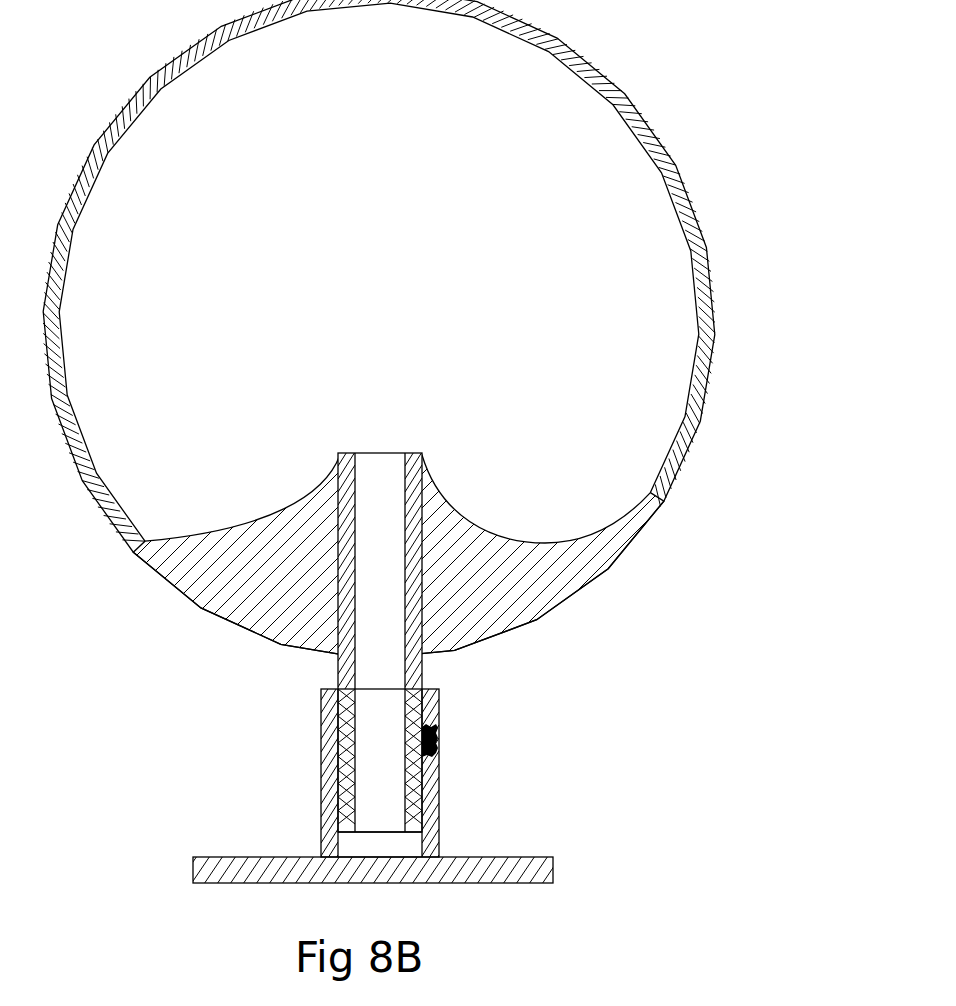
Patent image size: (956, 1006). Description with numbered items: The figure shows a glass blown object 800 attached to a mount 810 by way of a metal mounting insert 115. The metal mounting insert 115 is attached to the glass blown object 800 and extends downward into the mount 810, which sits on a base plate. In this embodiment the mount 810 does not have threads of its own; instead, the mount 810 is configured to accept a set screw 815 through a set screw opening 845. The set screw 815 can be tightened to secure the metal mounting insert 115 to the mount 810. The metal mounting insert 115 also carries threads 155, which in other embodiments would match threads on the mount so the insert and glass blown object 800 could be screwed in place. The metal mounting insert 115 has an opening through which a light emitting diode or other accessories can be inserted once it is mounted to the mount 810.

The glass blown object 800 is at (716, 126).
The metal mounting insert 115 is at (408, 668).
The threads 155 is at (408, 773).
The set screw opening 845 is at (427, 727).
The set screw 815 is at (438, 737).
The mount 810 is at (522, 867).